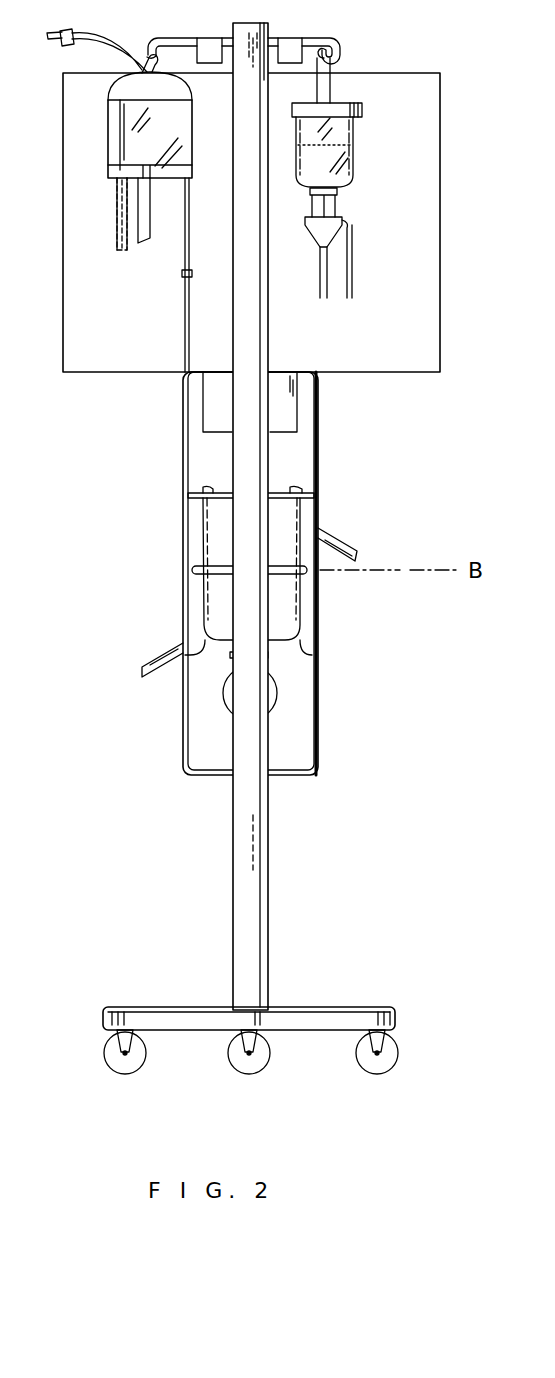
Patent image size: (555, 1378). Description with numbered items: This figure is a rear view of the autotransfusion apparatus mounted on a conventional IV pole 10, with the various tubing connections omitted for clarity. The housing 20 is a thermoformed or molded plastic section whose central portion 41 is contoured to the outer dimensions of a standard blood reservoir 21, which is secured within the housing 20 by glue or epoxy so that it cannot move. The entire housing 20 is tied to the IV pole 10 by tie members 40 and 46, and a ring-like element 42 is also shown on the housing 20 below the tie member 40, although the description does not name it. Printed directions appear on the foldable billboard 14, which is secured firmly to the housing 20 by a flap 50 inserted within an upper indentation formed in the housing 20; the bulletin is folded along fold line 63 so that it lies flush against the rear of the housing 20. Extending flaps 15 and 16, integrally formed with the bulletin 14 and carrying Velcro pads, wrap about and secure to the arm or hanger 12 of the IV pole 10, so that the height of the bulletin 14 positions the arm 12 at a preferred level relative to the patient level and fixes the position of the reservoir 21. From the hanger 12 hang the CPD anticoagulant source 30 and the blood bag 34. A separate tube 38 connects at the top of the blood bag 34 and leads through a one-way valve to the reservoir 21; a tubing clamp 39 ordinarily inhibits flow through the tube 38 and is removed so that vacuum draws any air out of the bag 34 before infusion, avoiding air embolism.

The IV pole 10 is at (250, 30).
The hanger 12 is at (329, 42).
The billboard 14 is at (424, 180).
The flap 15 is at (201, 38).
The flap 16 is at (290, 40).
The housing 20 is at (310, 438).
The blood reservoir 21 is at (290, 529).
The source 30 is at (298, 150).
The blood bag 34 is at (115, 146).
The tube 38 is at (92, 40).
The tubing clamp 39 is at (62, 44).
The tie member 40 is at (255, 660).
The central portion 41 is at (290, 496).
The ring 42 is at (272, 705).
The tie member 46 is at (245, 500).
The flap 50 is at (281, 398).
The fold line 63 is at (292, 372).